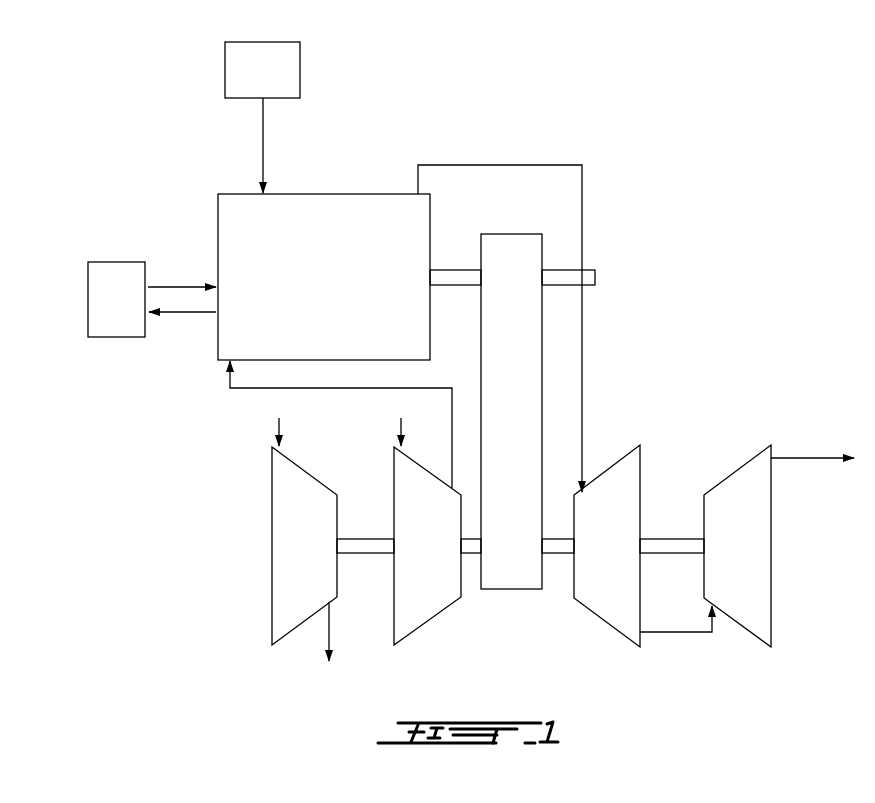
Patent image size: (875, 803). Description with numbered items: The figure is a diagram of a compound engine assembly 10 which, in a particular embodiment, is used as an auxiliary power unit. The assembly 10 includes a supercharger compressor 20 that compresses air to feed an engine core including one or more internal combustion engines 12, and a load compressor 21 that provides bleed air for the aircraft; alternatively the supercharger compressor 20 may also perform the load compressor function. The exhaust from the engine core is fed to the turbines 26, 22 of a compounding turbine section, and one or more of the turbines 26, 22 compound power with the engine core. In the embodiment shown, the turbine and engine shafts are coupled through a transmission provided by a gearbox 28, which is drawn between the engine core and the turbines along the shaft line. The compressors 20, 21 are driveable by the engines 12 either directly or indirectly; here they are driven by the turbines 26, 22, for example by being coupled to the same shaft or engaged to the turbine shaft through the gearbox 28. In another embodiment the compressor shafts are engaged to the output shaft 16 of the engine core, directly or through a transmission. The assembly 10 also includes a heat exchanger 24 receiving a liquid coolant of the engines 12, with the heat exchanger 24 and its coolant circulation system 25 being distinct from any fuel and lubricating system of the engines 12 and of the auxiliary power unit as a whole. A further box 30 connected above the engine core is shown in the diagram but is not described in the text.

The compound engine assembly 10 is at (676, 130).
The internal combustion engine 12 is at (350, 214).
The output shaft 16 is at (452, 278).
The supercharger compressor 20 is at (414, 610).
The load compressor 21 is at (292, 610).
The turbine 22 is at (750, 608).
The heat exchanger 24 is at (112, 278).
The coolant circulation system 25 is at (189, 313).
The turbine 26 is at (623, 477).
The gearbox 28 is at (527, 250).
The controller 30 is at (285, 67).